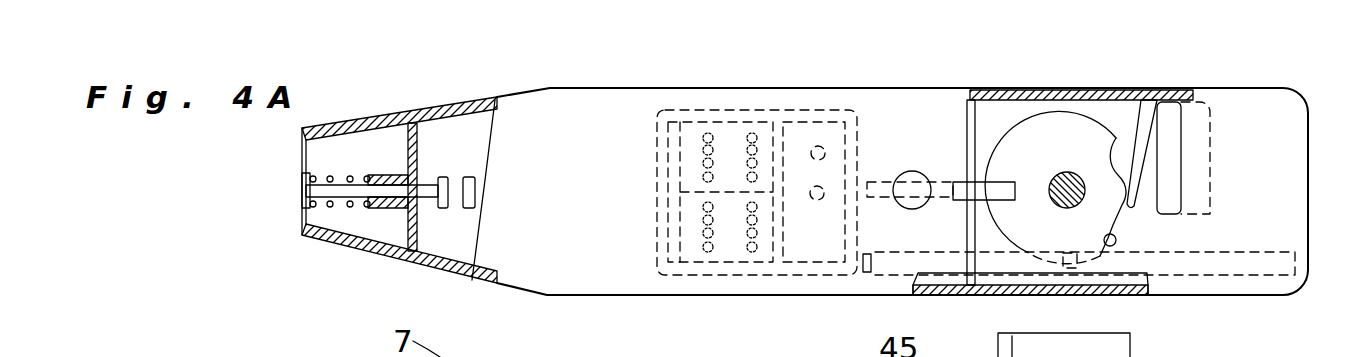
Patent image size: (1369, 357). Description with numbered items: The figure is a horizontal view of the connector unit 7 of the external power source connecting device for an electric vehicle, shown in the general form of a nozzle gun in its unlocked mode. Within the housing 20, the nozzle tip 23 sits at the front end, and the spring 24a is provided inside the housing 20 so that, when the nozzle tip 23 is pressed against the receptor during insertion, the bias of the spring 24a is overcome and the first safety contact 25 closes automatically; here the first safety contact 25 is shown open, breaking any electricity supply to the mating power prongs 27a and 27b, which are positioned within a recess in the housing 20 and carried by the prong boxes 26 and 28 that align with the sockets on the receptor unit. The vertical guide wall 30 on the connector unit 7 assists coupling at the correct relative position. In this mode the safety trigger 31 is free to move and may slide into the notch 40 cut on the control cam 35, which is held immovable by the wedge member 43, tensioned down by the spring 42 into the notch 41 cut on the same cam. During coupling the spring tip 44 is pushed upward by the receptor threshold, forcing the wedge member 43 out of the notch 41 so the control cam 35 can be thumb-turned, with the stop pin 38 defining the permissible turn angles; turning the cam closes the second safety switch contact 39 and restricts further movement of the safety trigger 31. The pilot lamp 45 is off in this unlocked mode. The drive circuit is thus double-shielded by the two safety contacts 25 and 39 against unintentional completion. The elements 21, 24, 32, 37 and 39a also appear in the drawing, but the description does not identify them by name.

The connector unit 7 is at (403, 96).
The housing 20 is at (616, 105).
The drive shaft 21 is at (1090, 90).
The nozzle tip 23 is at (474, 103).
The contact rod 24 is at (304, 196).
The spring 24a is at (350, 208).
The first safety contact 25 is at (470, 210).
The prong box 26 is at (784, 118).
The power prong 27a is at (823, 187).
The power prong 27b is at (818, 146).
The prong box 28 is at (728, 135).
The vertical guide wall 30 is at (660, 220).
The safety trigger 31 is at (920, 278).
The support post 32 is at (973, 140).
The control cam 35 is at (1060, 155).
The lever 37 is at (1156, 101).
The stop pin 38 is at (1116, 238).
The second safety switch contact 39 is at (1173, 130).
The spring wire 39a is at (1137, 167).
The notch 40 is at (1016, 188).
The notch 41 is at (1092, 268).
The spring 42 is at (1222, 265).
The wedge member 43 is at (1067, 278).
The spring tip 44 is at (948, 262).
The pilot lamp 45 is at (910, 186).